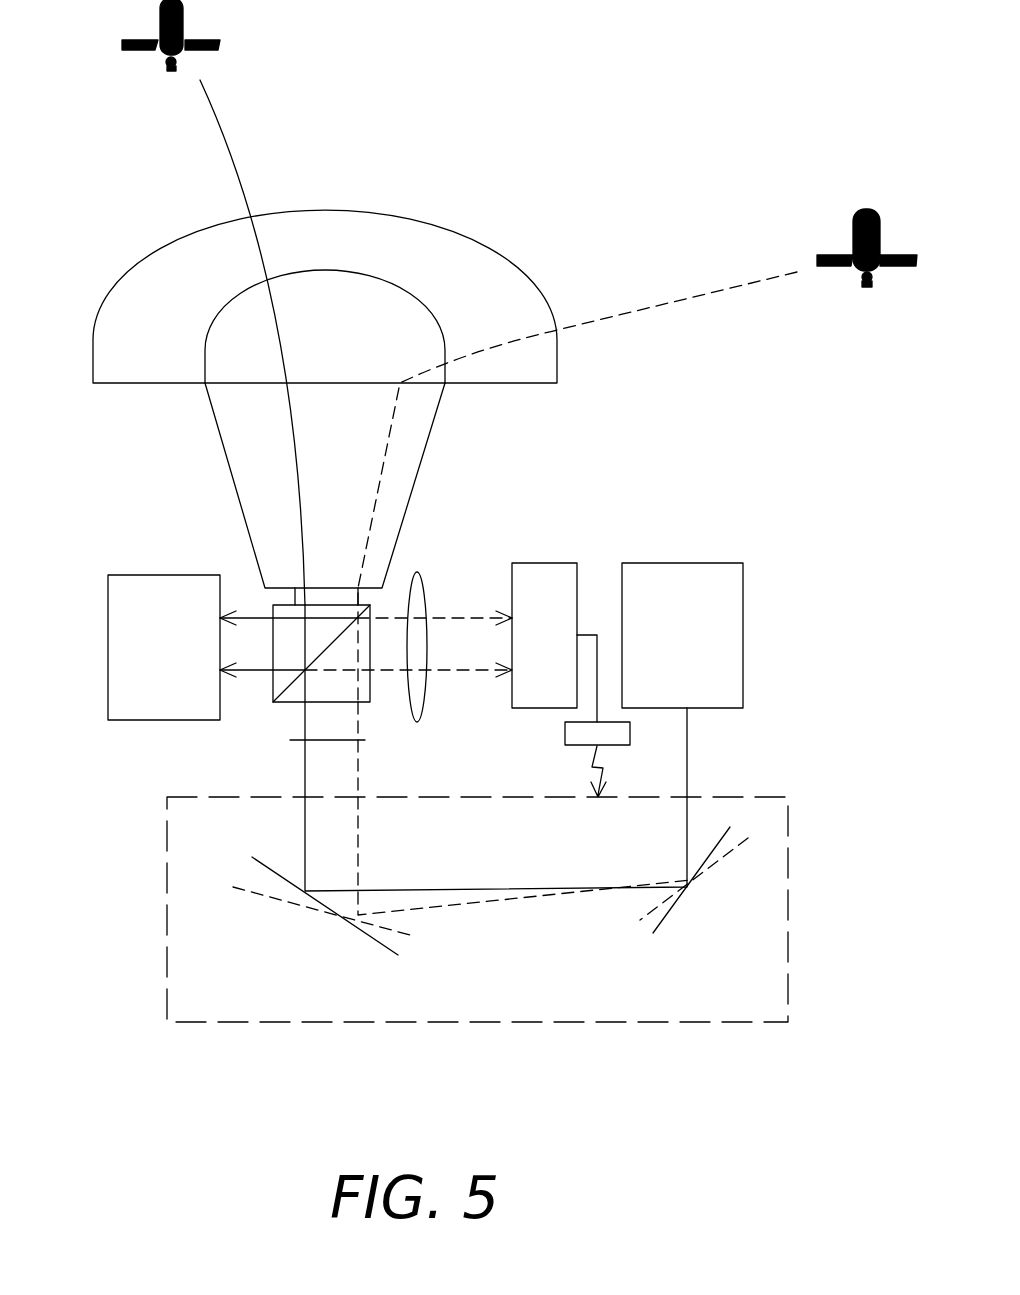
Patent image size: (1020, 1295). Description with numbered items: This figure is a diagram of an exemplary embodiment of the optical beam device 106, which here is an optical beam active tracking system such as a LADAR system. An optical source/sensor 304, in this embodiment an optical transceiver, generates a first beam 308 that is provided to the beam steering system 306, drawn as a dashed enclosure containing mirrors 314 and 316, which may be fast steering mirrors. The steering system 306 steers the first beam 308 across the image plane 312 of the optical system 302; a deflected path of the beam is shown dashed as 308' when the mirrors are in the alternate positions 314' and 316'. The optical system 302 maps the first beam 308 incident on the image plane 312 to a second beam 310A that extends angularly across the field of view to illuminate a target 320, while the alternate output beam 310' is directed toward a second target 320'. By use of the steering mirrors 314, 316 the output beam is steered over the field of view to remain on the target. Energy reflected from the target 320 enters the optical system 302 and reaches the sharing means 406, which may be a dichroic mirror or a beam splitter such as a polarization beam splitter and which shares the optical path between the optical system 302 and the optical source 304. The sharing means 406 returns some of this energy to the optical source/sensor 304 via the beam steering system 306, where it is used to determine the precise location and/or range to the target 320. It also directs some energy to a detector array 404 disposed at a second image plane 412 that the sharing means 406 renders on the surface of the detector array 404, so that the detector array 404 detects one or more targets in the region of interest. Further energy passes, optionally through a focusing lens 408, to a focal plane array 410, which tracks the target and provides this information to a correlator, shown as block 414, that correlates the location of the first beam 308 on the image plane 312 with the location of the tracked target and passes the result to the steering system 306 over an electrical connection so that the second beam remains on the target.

The optical beam device 106 is at (688, 129).
The optical system 302 is at (163, 434).
The optical source/sensor 304 is at (745, 600).
The beam steering system 306 is at (790, 860).
The first beam 308 is at (487, 748).
The second optical beam 308' is at (523, 808).
The first signal beam 310A is at (242, 163).
The second signal beam 310' is at (577, 480).
The image plane 312 is at (367, 743).
The steering mirror 314 is at (632, 906).
The mirror second position 314' is at (698, 900).
The steering mirror 316 is at (304, 882).
The mirror second position 316' is at (307, 931).
The target 320 is at (137, 55).
The second satellite 320' is at (827, 282).
The detector array 404 is at (145, 575).
The optical path sharing means 406 is at (370, 690).
The focusing lens 408 is at (418, 572).
The focal plane array 410 is at (560, 563).
The second image plane 412 is at (220, 599).
The controller 414 is at (573, 746).